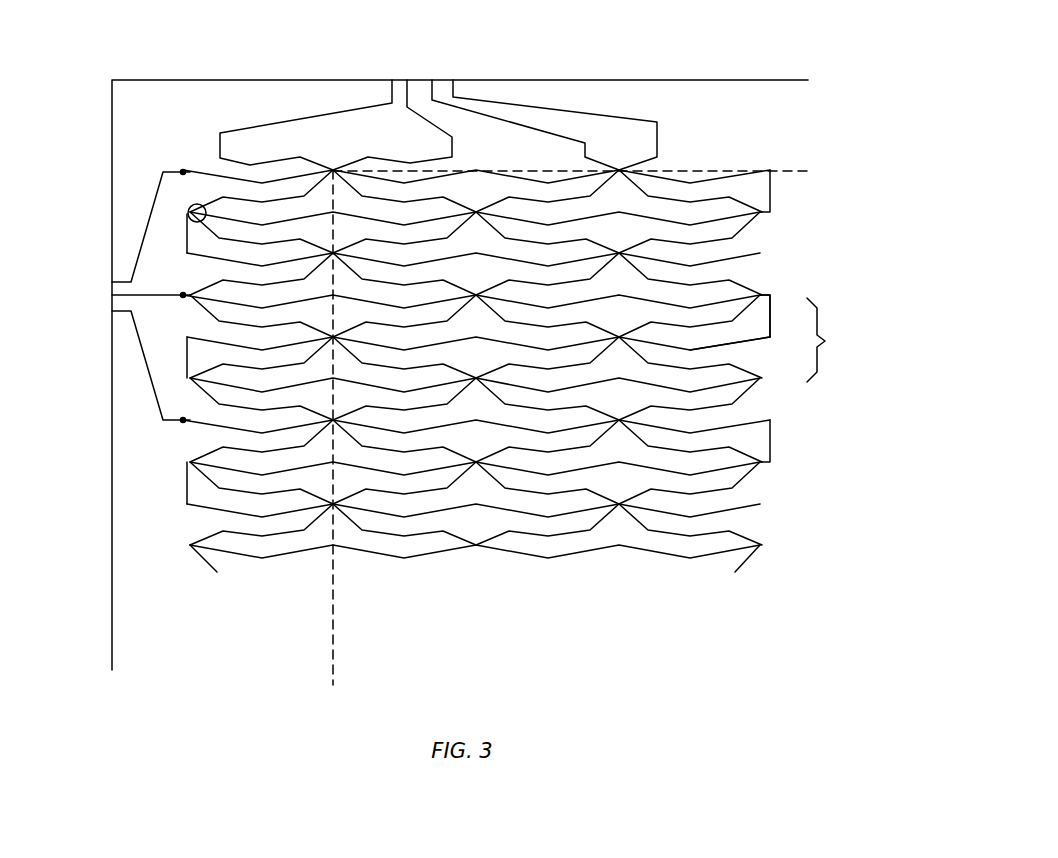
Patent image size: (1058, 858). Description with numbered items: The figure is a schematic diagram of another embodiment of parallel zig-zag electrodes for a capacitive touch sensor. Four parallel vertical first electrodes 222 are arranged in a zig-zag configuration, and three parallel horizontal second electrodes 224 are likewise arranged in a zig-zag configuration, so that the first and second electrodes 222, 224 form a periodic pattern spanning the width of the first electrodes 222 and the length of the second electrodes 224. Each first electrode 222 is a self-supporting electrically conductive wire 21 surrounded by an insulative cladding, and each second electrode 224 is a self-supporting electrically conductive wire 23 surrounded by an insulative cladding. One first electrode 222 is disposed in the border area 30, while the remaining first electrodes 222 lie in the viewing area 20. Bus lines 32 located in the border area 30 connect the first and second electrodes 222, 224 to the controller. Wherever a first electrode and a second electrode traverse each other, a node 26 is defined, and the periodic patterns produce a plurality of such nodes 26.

The viewing area 20 is at (671, 614).
The conductive wire 21 is at (533, 536).
The conductive wire 23 is at (775, 310).
The node 26 is at (200, 203).
The border area 30 is at (168, 615).
The bus line 32 is at (306, 117).
The first electrode 222 is at (488, 75).
The second electrode 224 is at (851, 340).